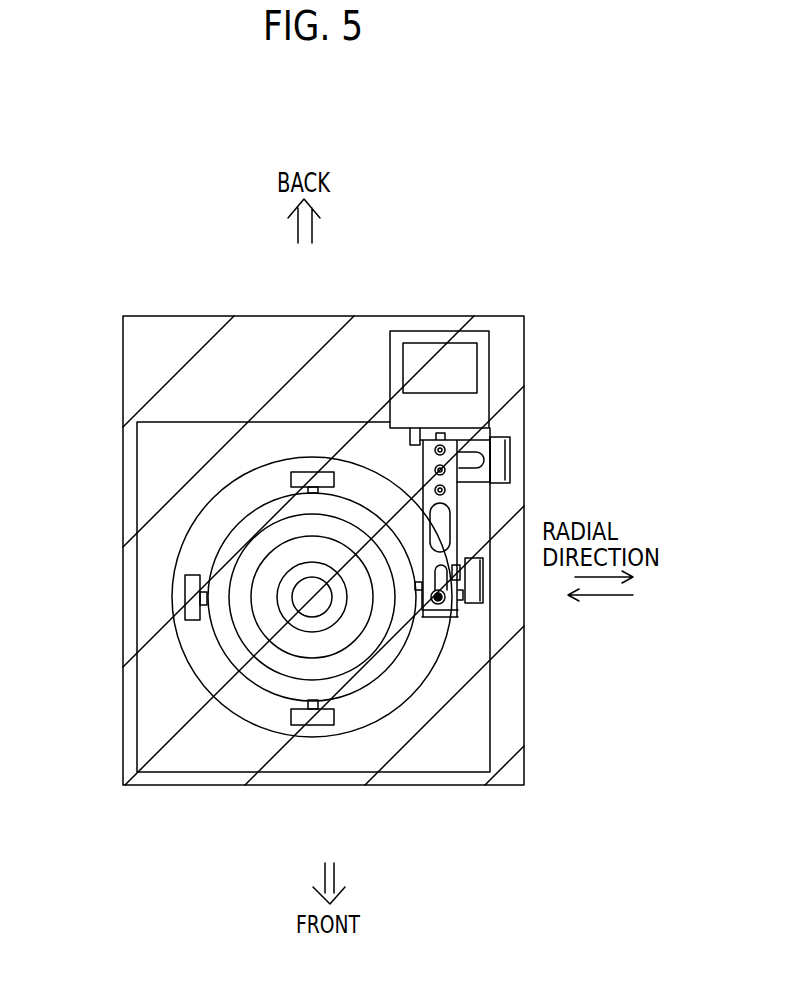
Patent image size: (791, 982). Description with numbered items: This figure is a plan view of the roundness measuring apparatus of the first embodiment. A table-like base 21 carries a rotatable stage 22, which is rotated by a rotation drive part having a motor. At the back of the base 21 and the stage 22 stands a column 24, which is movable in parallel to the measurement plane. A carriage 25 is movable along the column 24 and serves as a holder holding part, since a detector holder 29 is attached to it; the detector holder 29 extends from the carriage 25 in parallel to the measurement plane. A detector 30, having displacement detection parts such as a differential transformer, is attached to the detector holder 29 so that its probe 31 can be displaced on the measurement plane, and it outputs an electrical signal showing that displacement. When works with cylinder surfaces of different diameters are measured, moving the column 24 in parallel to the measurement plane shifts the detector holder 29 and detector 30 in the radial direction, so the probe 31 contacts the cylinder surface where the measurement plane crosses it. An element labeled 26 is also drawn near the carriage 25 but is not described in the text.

The base 21 is at (166, 769).
The stage 22 is at (235, 535).
The column 24 is at (465, 358).
The carriage 25 is at (483, 383).
The lead screw 26 is at (488, 427).
The detector holder 29 is at (457, 518).
The detector 30 is at (455, 607).
The probe 31 is at (474, 580).